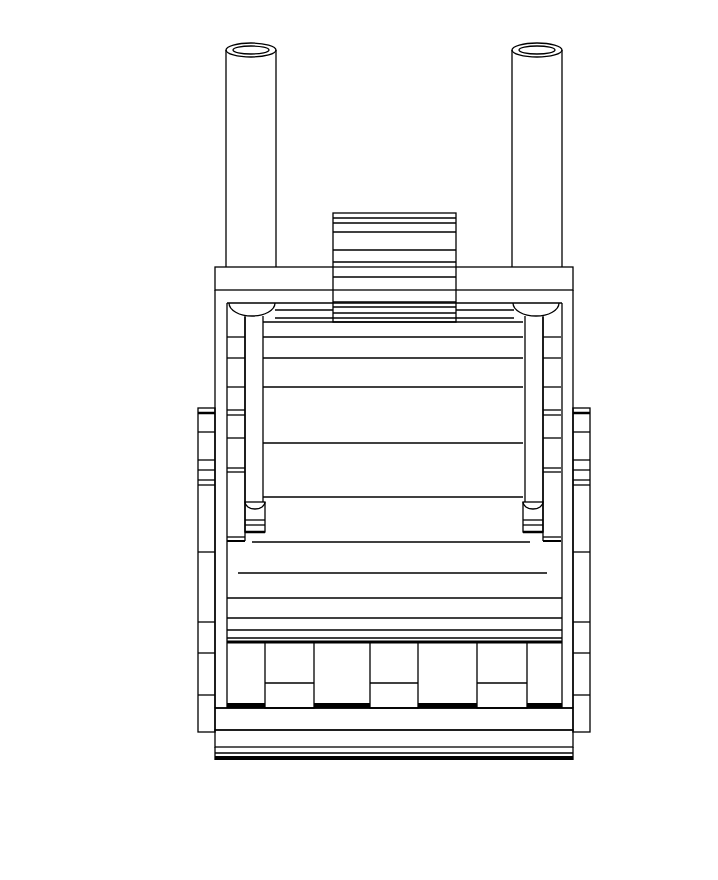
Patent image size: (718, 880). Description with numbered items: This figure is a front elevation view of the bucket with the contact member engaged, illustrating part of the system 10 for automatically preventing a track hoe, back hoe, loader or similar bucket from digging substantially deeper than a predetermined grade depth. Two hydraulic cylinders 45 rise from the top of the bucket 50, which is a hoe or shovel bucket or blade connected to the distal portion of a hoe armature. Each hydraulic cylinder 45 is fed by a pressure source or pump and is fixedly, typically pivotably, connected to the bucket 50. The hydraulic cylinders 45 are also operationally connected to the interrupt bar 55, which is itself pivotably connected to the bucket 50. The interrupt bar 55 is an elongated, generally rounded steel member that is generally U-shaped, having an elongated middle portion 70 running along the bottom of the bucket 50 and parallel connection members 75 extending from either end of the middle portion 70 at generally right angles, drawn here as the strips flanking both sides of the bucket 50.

The system 10 is at (88, 359).
The hydraulic cylinder 45 is at (263, 135).
The bucket 50 is at (298, 375).
The interrupt bar 55 is at (187, 408).
The middle portion 70 is at (522, 753).
The connection members 75 is at (198, 572).